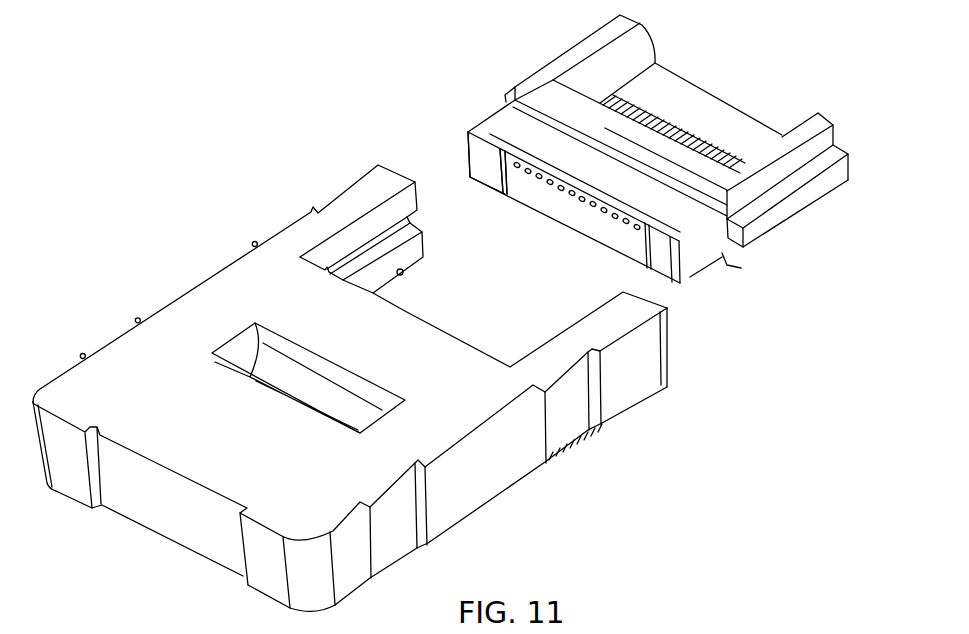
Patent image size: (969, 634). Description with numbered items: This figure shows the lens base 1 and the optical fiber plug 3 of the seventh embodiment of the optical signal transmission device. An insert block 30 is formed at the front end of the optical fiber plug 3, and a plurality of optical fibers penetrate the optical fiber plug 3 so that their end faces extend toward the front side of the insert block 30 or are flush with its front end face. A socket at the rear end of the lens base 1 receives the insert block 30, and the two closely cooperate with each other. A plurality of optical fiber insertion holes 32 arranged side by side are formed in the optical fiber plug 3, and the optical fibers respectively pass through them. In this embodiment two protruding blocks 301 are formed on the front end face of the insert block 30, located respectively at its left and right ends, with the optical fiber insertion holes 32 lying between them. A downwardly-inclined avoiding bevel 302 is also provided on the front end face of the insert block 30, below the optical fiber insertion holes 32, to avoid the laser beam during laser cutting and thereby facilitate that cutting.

The lens base 1 is at (167, 338).
The insert block 30 is at (551, 243).
The protruding blocks 301 is at (483, 165).
The optical fiber insertion holes 32 is at (580, 203).
The avoiding bevel 302 is at (613, 241).
The optical fiber plug 3 is at (787, 226).